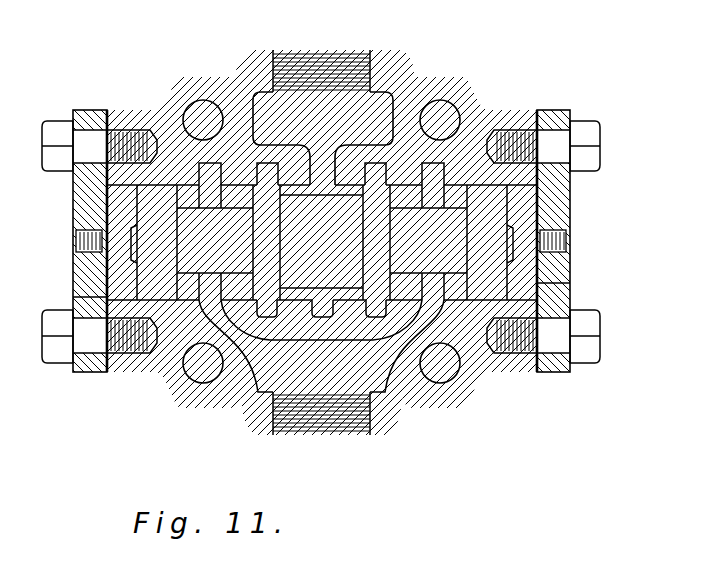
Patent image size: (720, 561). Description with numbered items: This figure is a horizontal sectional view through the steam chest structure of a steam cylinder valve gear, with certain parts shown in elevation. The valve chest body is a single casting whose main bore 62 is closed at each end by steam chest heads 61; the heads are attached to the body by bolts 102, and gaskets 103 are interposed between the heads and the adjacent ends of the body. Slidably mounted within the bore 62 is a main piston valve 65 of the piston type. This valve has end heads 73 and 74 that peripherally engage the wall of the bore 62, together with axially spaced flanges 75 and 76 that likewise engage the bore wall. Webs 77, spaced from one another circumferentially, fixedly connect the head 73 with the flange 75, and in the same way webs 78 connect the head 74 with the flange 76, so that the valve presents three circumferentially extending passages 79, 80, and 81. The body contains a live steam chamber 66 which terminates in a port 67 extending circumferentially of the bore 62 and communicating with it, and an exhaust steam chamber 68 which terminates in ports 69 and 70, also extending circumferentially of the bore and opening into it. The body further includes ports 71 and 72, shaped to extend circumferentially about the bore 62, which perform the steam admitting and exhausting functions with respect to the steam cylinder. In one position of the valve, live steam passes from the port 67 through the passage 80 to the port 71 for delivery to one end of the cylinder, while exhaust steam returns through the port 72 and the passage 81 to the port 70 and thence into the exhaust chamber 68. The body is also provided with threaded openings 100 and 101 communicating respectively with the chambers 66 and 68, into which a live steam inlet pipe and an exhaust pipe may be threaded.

The steam chest head 61 is at (568, 206).
The bore 62 is at (568, 286).
The main piston valve 65 is at (153, 275).
The live steam chamber 66 is at (263, 102).
The port 67 is at (319, 304).
The exhaust steam chamber 68 is at (373, 378).
The port 69 is at (213, 203).
The port 70 is at (433, 203).
The port 71 is at (267, 197).
The port 72 is at (375, 308).
The end head 73 is at (148, 207).
The end head 74 is at (474, 241).
The flange 75 is at (260, 235).
The flange 76 is at (368, 220).
The webs 77 is at (190, 237).
The webs 78 is at (403, 235).
The circumferentially extending passage 79 is at (237, 281).
The circumferentially extending passage 80 is at (300, 193).
The circumferentially extending passage 81 is at (410, 203).
The threaded opening 100 is at (350, 57).
The threaded opening 101 is at (311, 427).
The bolt 102 is at (591, 139).
The gasket 103 is at (106, 110).